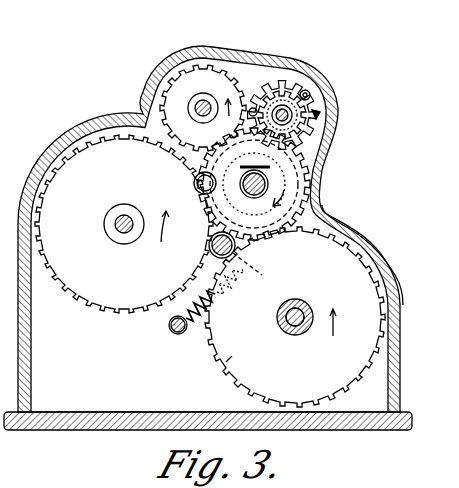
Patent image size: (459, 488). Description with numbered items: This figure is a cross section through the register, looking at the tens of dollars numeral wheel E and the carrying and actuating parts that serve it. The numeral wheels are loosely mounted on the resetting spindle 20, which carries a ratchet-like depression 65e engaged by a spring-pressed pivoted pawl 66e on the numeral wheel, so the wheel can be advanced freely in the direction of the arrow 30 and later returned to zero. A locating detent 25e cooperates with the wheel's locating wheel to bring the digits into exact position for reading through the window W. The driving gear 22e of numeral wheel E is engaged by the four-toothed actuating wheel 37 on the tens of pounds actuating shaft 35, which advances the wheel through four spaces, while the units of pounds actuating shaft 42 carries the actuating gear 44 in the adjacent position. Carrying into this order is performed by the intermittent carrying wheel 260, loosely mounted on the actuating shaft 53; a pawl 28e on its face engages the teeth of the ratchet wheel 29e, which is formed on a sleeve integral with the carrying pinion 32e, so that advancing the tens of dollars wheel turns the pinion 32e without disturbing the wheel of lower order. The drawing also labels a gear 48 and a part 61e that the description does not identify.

The window W is at (324, 184).
The actuating gear 44 is at (78, 289).
The units of pounds actuating shaft 42 is at (123, 235).
The upper gear 48 is at (196, 106).
The carrying pinion 32e is at (270, 88).
The actuating shaft 53 is at (318, 100).
The pawl 28e is at (287, 112).
The intermittent carrying wheel 260 is at (307, 91).
The actuating wheel 37 is at (318, 114).
The pivoted pawl 66e is at (272, 167).
The ratchet wheel 29e is at (331, 137).
The arrow 30 is at (281, 199).
The ratchet-like depression 65e is at (243, 188).
The key bar 61e is at (251, 159).
The tens of dollars numeral wheel E is at (216, 153).
The resetting spindle 20 is at (212, 235).
The driving gear 22e is at (302, 227).
The tens of pounds actuating shaft 35 is at (296, 326).
The locating detent 25e is at (244, 269).